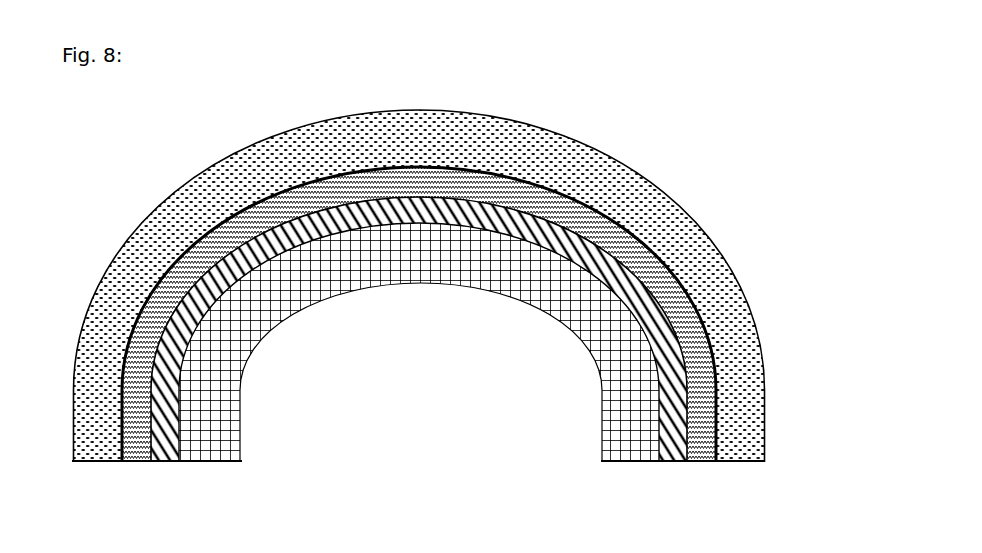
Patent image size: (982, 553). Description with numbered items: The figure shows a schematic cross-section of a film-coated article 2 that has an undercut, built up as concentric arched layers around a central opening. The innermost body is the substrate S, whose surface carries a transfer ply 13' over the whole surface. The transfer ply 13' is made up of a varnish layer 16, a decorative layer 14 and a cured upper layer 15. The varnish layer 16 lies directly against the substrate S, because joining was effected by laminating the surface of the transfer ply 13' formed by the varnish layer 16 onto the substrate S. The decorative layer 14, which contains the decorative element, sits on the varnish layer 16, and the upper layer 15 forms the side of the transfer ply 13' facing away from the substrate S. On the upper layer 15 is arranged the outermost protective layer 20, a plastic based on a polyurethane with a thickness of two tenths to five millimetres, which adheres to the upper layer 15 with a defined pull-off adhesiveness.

The film-coated article 2 is at (599, 65).
The protective layer 20 is at (610, 193).
The upper layer 15 is at (713, 347).
The decorative layer 14 is at (688, 313).
The varnish layer 16 is at (641, 296).
The transfer ply 13' is at (407, 363).
The substrate S is at (227, 355).